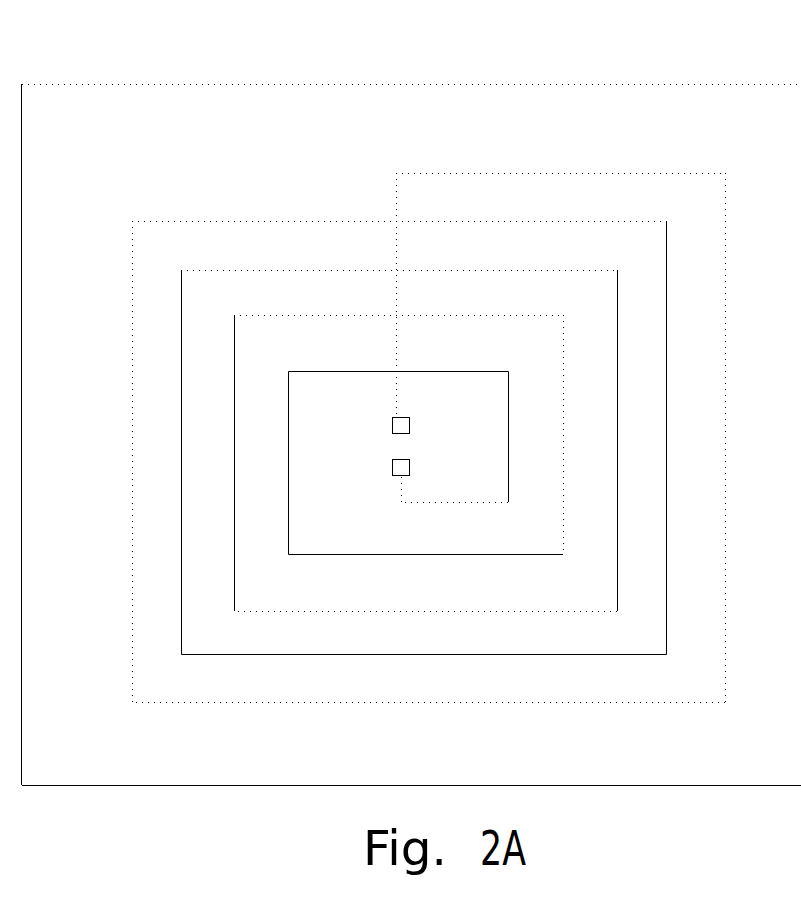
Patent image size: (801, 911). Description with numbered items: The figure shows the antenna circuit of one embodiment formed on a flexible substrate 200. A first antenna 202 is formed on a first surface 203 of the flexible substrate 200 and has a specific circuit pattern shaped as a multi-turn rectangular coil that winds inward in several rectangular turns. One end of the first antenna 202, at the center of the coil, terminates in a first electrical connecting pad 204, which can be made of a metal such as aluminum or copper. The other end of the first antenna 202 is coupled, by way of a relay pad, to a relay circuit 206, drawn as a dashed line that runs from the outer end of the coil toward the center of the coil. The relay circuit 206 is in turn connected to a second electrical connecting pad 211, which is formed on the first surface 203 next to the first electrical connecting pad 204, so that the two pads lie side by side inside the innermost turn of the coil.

The flexible substrate 200 is at (87, 83).
The first antenna 202 is at (498, 172).
The first surface 203 is at (81, 126).
The first electrical connecting pad 204 is at (394, 466).
The relay circuit 206 is at (396, 198).
The second electrical connecting pad 211 is at (403, 422).